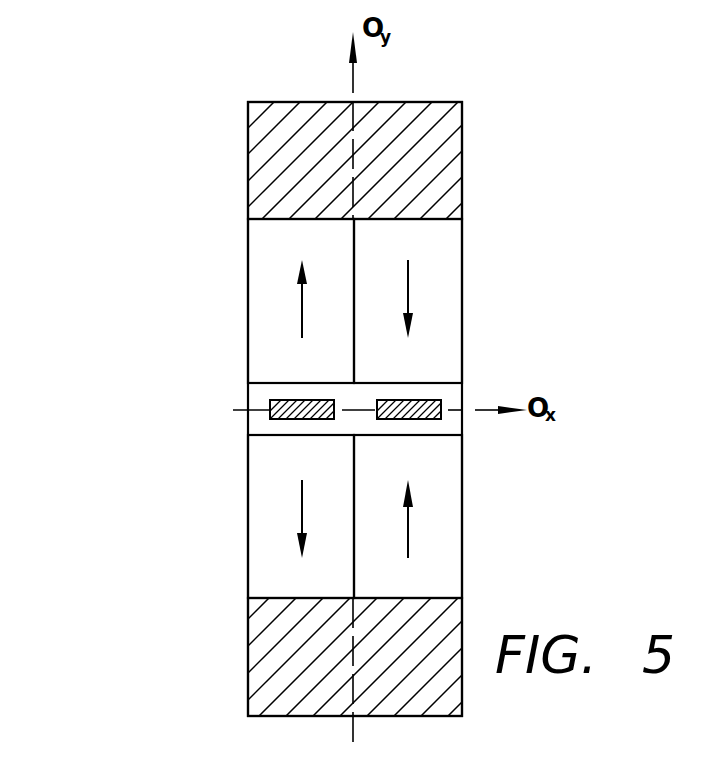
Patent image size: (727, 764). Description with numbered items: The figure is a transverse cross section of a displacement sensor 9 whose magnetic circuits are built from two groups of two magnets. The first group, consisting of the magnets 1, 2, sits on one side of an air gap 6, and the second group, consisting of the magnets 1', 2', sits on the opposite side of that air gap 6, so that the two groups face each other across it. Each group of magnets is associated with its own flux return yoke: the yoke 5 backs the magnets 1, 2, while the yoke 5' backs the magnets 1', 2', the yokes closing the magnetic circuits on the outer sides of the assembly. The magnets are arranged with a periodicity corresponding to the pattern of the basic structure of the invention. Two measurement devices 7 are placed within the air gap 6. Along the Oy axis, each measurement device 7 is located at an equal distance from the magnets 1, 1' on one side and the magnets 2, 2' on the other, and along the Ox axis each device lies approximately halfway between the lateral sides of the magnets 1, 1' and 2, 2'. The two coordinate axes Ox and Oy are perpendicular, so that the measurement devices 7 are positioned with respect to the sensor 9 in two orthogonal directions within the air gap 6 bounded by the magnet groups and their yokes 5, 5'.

The sensor 9 is at (130, 175).
The flux return yoke 5 is at (346, 158).
The flux return yoke 5' is at (345, 657).
The magnet 1 is at (264, 301).
The magnet 2 is at (454, 301).
The magnet 1' is at (264, 515).
The magnet 2' is at (446, 516).
The air gap 6 is at (428, 390).
The measurement devices 7 is at (283, 398).